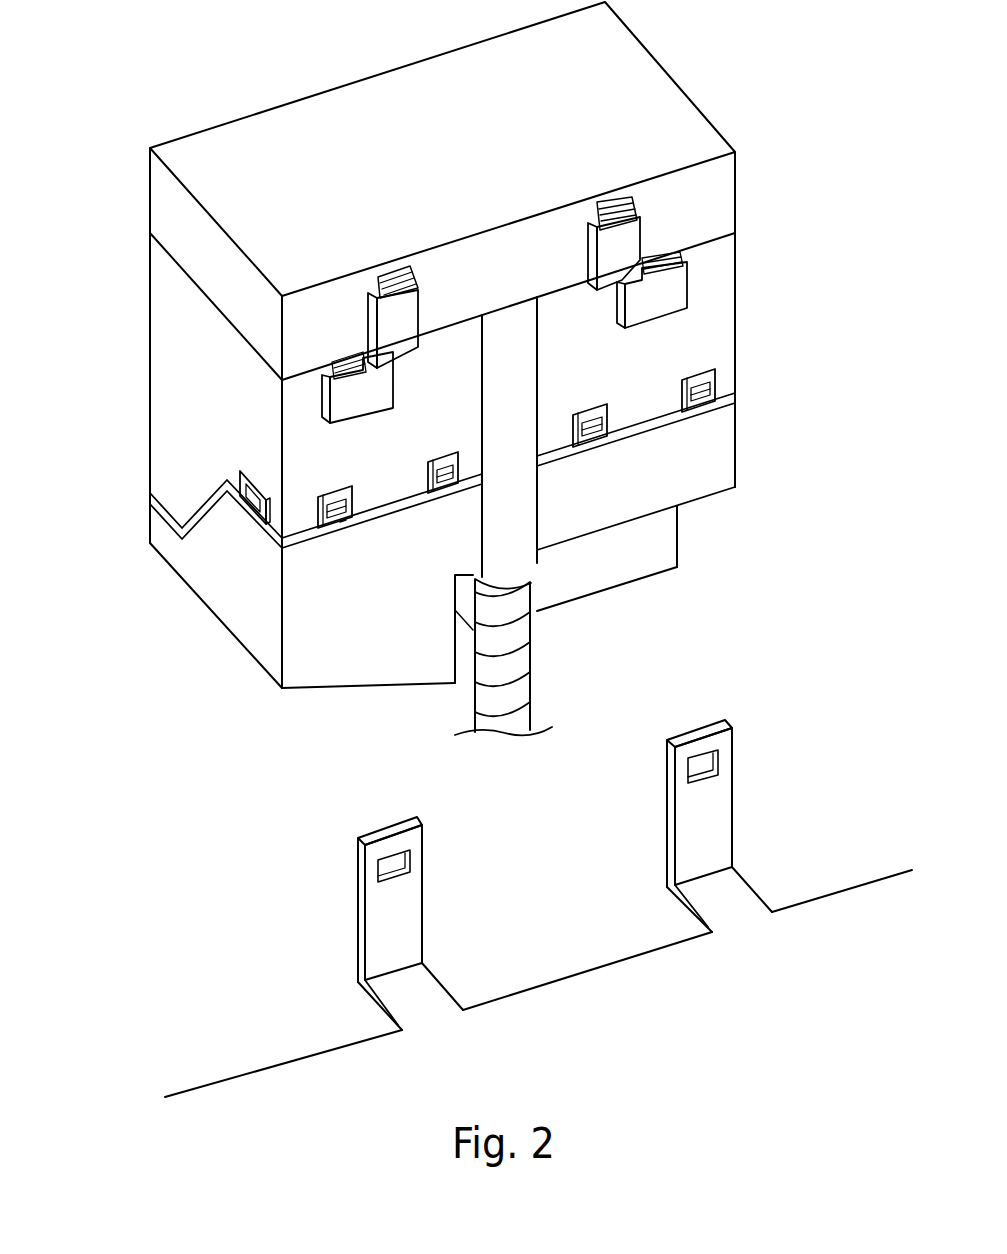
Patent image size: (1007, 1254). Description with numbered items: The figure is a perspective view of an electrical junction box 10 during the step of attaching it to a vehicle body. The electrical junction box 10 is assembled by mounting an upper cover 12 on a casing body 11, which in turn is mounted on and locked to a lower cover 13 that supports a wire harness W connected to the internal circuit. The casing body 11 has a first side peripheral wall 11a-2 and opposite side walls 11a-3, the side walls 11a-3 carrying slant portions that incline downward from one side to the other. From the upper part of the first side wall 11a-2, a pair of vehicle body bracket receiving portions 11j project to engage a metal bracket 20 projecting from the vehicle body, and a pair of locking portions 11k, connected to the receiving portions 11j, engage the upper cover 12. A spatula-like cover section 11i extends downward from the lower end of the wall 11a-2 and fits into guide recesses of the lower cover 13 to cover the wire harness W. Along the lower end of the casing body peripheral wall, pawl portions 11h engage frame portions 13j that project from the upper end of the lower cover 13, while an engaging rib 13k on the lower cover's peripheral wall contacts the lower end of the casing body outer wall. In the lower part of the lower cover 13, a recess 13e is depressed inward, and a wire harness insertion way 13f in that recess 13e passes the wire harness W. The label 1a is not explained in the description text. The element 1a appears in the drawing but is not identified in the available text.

The electrical junction box 10 is at (178, 132).
The upper cover 12 is at (632, 88).
The wall surface 1a is at (174, 302).
The casing body 11 is at (741, 378).
The first side peripheral wall 11a-2 is at (713, 333).
The side wall 11a-3 is at (172, 477).
The pawl portion 11h is at (342, 535).
The cover section 11i is at (517, 527).
The vehicle body bracket receiving portion 11j is at (337, 396).
The locking portion 11k is at (390, 323).
The lower cover 13 is at (722, 460).
The recess 13e is at (618, 552).
The wire harness insertion way 13f is at (470, 537).
The frame portion 13j is at (303, 540).
The engaging rib 13k is at (737, 398).
The metal bracket 20 is at (420, 823).
The wire harness W is at (515, 663).